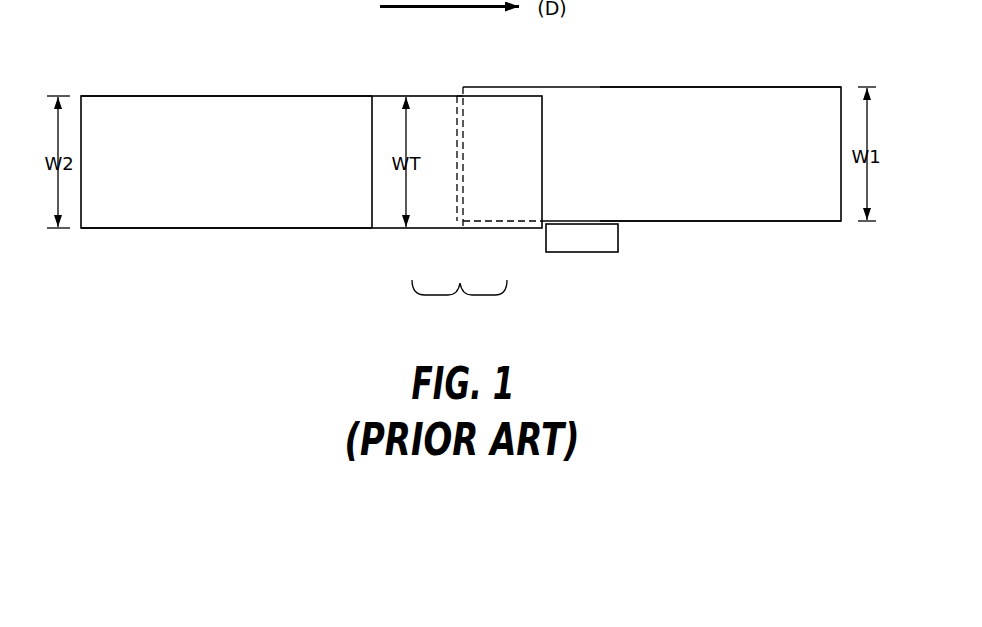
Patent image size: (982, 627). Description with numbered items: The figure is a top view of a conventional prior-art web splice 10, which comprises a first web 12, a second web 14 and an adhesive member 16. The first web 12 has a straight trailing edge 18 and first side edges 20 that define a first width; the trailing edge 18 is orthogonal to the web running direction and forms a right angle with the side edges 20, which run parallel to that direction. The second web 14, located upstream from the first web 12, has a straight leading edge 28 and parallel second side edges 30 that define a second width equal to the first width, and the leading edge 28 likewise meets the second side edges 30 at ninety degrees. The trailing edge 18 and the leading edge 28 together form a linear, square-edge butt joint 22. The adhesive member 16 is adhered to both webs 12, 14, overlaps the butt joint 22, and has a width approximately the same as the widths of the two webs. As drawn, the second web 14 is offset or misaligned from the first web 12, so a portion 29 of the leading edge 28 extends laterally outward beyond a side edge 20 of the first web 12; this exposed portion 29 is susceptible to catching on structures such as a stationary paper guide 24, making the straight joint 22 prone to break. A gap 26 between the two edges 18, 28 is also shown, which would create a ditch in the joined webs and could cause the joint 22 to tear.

The web splice 10 is at (247, 68).
The first web 12 is at (623, 87).
The second web 14 is at (177, 229).
The adhesive member 16 is at (371, 128).
The trailing edge 18 is at (462, 168).
The first side edges 20 is at (745, 87).
The butt joint 22 is at (459, 300).
The stationary paper guide 24 is at (622, 240).
The gap 26 is at (457, 90).
The leading edge 28 is at (458, 120).
The exposed portion of the leading edge 29 is at (456, 228).
The second side edges 30 is at (178, 96).